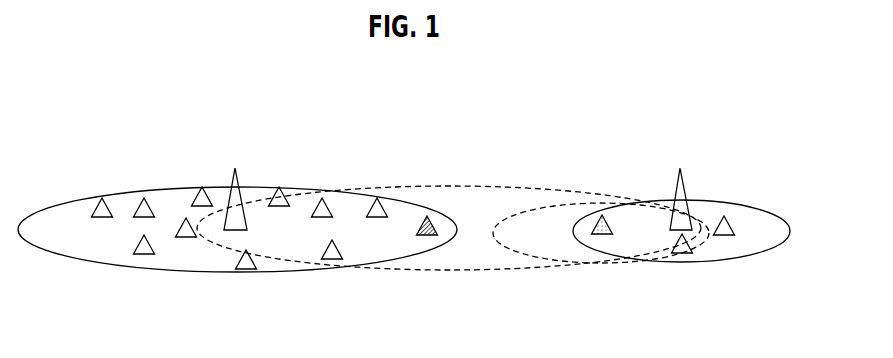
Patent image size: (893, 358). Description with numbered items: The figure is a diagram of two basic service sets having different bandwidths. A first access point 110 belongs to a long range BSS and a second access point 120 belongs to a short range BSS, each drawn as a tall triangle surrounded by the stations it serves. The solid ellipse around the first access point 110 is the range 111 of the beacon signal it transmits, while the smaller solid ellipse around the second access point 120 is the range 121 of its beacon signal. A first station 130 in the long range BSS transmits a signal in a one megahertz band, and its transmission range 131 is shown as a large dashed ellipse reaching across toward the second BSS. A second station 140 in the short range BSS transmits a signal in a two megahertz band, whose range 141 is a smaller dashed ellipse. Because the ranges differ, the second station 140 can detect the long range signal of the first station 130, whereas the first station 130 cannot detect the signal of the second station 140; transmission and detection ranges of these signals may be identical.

The AP1 110 is at (235, 140).
The range of beacon signal transmitted by AP1 111 is at (219, 273).
The AP2 120 is at (680, 140).
The range of beacon signal transmitted by AP2 121 is at (698, 262).
The STA1 130 is at (385, 251).
The range of signal transmitted by STA1 131 is at (415, 273).
The STA2 140 is at (643, 245).
The range of signal transmitted by STA2 141 is at (607, 268).